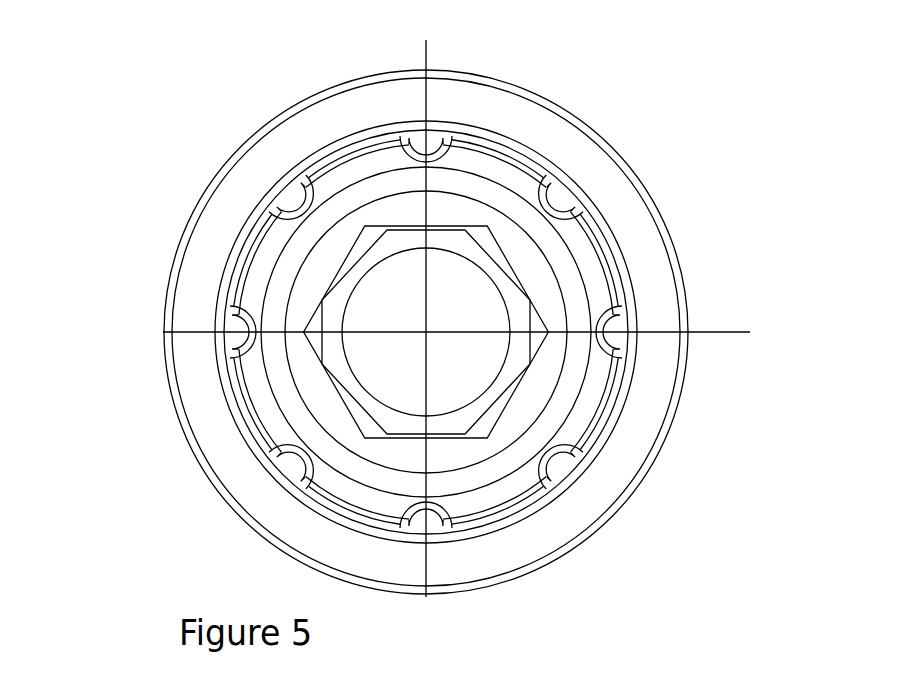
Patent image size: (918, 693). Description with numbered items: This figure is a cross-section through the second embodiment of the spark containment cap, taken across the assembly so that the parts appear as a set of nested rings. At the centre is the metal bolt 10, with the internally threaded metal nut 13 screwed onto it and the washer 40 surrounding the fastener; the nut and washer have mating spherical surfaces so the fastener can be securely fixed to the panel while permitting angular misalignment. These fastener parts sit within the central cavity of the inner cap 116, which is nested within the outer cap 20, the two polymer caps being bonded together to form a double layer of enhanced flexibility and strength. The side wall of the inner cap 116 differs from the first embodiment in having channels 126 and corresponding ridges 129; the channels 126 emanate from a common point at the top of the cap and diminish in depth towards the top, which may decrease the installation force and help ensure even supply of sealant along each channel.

The metal bolt 10 is at (468, 306).
The internally threaded metal nut 13 is at (553, 375).
The outer cap 20 is at (622, 205).
The washer 40 is at (572, 413).
The inner cap 116 is at (505, 153).
The channels 126 is at (422, 142).
The ridges 129 is at (372, 140).